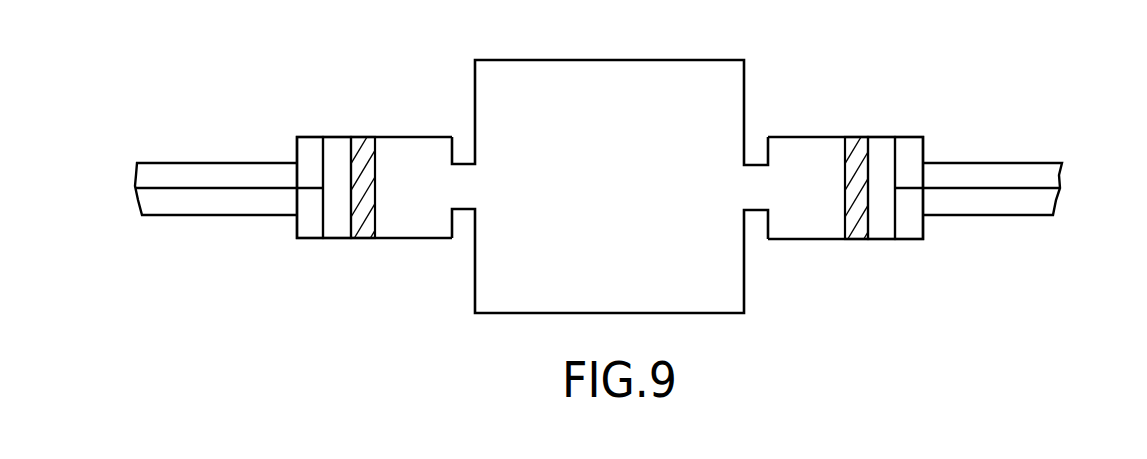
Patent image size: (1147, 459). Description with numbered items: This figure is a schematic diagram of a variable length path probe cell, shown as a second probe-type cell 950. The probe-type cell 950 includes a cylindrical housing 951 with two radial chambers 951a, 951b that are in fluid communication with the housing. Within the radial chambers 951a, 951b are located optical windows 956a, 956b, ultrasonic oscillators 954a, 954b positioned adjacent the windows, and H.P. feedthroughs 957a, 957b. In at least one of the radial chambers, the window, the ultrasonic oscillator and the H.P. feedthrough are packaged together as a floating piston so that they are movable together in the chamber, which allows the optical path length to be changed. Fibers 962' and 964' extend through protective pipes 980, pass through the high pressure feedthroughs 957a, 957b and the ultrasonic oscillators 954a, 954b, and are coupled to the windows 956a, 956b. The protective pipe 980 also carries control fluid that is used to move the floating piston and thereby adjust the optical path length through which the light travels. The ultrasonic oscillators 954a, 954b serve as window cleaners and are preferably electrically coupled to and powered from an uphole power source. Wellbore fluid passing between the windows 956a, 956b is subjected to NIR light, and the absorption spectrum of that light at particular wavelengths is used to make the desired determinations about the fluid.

The probe-type cell 950 is at (866, 37).
The cylindrical housing 951 is at (727, 292).
The radial chamber 951a is at (810, 217).
The radial chamber 951b is at (407, 213).
The ultrasonic oscillator 954a is at (883, 148).
The ultrasonic oscillator 954b is at (333, 150).
The optical window 956a is at (846, 152).
The optical window 956b is at (363, 148).
The H.P. feedthrough 957a is at (908, 222).
The H.P. feedthrough 957b is at (310, 148).
The fiber 962' is at (980, 152).
The fiber 964' is at (229, 228).
The protective pipe 980 is at (248, 215).